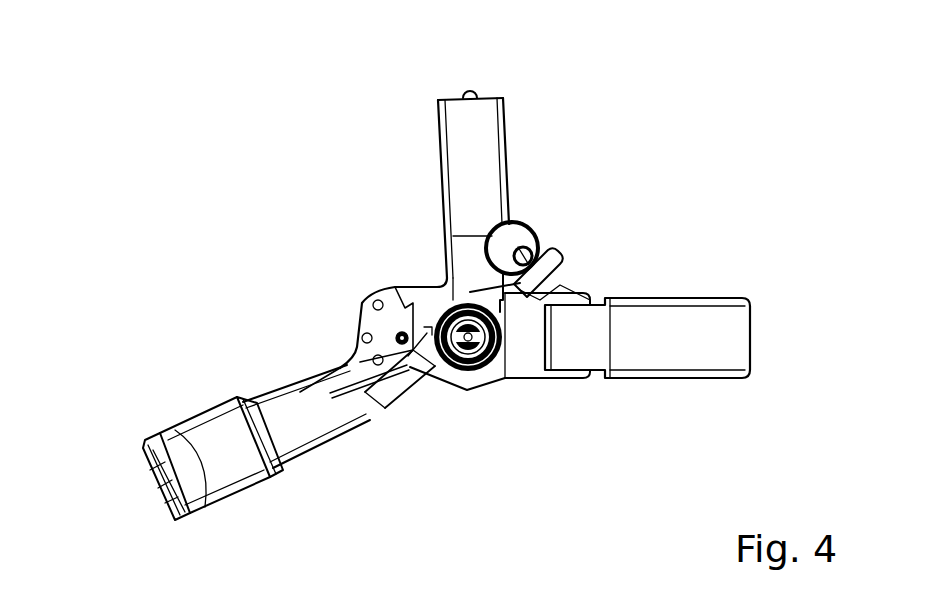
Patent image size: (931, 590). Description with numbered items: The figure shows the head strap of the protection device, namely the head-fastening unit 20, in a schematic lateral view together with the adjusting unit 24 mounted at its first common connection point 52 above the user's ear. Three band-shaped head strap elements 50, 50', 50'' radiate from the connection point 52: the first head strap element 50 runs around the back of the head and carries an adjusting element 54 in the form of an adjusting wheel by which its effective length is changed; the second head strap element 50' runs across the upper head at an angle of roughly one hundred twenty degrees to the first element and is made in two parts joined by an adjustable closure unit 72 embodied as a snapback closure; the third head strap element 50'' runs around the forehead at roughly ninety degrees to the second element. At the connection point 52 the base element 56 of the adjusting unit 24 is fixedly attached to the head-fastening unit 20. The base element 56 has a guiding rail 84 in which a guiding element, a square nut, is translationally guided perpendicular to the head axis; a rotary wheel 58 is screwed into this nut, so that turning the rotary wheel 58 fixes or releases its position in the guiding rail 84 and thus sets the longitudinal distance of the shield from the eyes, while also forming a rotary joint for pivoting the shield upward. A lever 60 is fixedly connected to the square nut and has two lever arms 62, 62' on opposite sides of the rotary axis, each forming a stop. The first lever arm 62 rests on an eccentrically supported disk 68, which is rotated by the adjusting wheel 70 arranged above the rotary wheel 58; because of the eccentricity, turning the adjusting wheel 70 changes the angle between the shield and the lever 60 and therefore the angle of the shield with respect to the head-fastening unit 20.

The head-fastening unit 20 is at (636, 168).
The adjusting unit 24 is at (480, 397).
The first head strap element 50 is at (265, 446).
The second head strap element 50' is at (432, 156).
The third head strap element 50'' is at (647, 297).
The first common connection point 52 is at (402, 280).
The adjusting element 54 is at (143, 472).
The base element 56 is at (420, 322).
The rotary wheel 58 is at (483, 345).
The lever 60 is at (448, 398).
The first lever arm 62 is at (582, 274).
The second lever arm 62' is at (396, 428).
The eccentrically supported disk 68 is at (534, 250).
The adjusting wheel 70 is at (518, 252).
The adjustable closure unit 72 is at (469, 96).
The guiding rail 84 is at (509, 345).